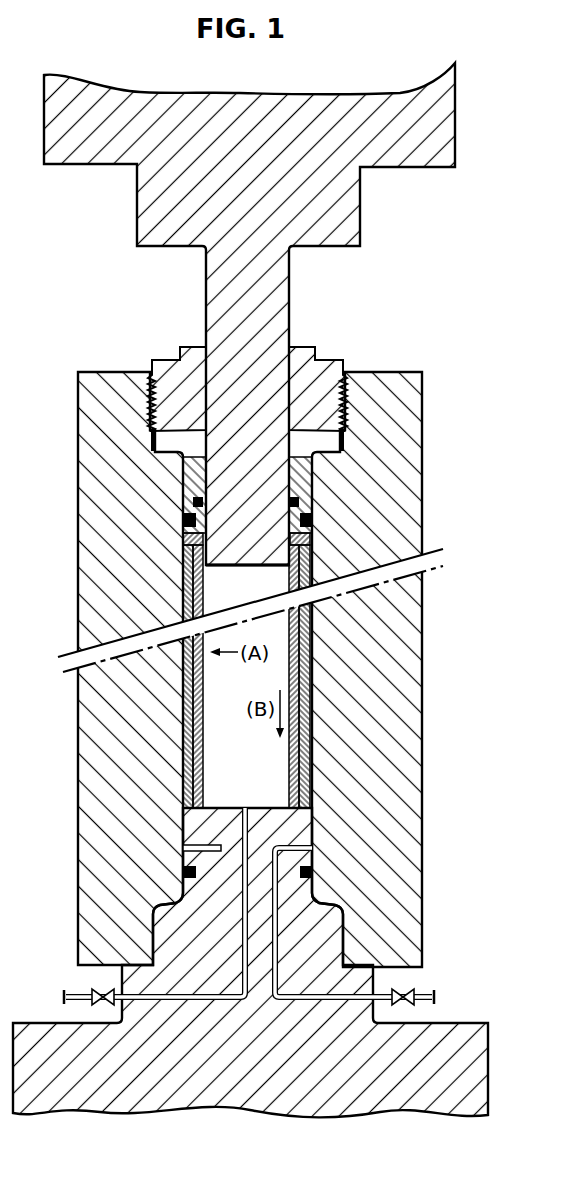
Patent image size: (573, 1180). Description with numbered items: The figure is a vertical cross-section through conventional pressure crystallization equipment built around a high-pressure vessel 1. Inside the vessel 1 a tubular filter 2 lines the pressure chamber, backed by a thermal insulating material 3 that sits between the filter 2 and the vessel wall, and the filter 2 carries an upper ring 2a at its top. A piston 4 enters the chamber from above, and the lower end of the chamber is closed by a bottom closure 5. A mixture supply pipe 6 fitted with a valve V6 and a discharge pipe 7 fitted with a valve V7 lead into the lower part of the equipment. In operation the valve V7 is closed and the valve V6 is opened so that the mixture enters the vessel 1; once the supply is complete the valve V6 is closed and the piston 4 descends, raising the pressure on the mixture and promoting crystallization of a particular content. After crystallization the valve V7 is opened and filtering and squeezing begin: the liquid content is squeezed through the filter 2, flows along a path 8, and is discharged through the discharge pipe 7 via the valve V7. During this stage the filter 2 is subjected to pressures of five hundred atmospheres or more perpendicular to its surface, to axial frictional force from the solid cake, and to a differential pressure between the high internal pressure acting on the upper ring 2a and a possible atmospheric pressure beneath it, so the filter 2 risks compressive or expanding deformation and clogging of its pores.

The vessel 1 is at (410, 451).
The filter 2 is at (310, 688).
The upper ring 2a is at (183, 540).
The thermal insulating material 3 is at (308, 645).
The piston 4 is at (277, 299).
The bottom closure 5 is at (170, 946).
The mixture supply pipe 6 is at (178, 997).
The discharge pipe 7 is at (345, 997).
The path 8 is at (188, 870).
The valve V6 is at (122, 992).
The valve V7 is at (408, 992).